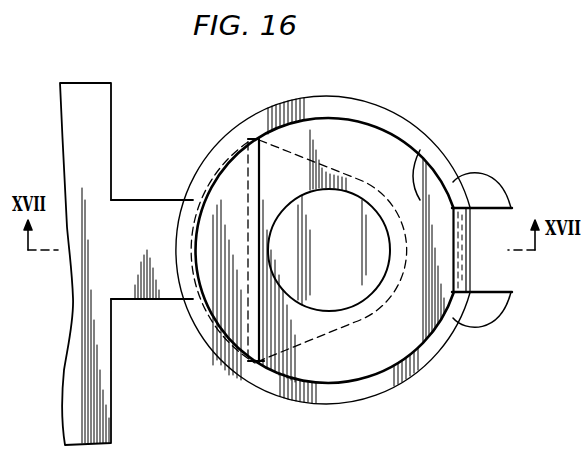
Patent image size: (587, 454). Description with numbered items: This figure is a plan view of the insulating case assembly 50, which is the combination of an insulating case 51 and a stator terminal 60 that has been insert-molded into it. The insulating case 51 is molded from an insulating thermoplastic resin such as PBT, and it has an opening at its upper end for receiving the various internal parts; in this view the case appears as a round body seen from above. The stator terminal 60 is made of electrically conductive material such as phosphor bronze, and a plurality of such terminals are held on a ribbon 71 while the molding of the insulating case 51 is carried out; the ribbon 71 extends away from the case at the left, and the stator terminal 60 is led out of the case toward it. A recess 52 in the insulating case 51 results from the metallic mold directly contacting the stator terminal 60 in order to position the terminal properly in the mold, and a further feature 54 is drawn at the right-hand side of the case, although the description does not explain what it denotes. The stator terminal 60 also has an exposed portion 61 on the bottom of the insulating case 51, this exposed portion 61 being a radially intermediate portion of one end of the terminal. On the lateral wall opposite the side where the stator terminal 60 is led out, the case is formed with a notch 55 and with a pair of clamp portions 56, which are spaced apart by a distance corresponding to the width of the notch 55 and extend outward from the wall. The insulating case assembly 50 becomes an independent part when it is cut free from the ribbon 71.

The insulating case assembly 50 is at (410, 92).
The insulating case 51 is at (341, 90).
The recess 52 is at (351, 183).
The recess 54 is at (416, 152).
The notch 55 is at (459, 209).
The clamp portions 56 is at (497, 195).
The stator terminal 60 is at (136, 194).
The exposed portion 61 is at (238, 170).
The ribbon 71 is at (92, 88).